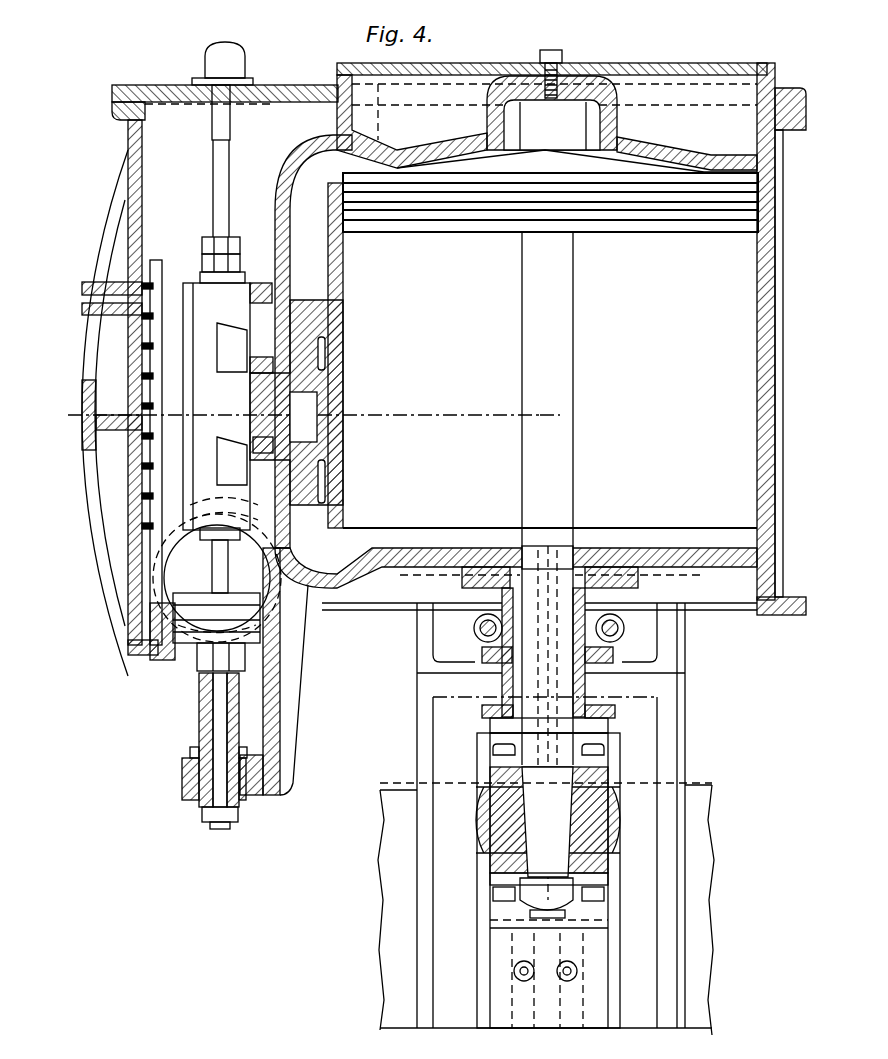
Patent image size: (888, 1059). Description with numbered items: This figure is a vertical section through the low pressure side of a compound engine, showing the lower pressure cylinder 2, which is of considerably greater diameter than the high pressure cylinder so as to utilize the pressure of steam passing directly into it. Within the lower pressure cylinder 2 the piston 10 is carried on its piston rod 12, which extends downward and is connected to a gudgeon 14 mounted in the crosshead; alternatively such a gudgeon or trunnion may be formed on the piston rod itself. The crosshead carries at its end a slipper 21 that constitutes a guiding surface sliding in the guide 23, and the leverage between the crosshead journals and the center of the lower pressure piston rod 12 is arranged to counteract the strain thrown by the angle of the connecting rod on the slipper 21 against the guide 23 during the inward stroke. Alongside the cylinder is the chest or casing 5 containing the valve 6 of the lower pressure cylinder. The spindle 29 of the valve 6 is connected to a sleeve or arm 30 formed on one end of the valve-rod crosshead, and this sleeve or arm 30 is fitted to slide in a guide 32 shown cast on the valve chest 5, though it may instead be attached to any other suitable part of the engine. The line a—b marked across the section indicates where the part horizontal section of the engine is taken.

The lower pressure cylinder 2 is at (766, 432).
The chest or casing 5 is at (158, 155).
The valve 6 is at (228, 406).
The piston 10 is at (470, 232).
The piston rod 12 is at (522, 486).
The gudgeon 14 is at (600, 822).
The slipper 21 is at (500, 912).
The guide 23 is at (496, 1028).
The spindle 29 is at (222, 567).
The sleeve or arm 30 is at (205, 707).
The guide 32 is at (280, 718).
The section line a—b a is at (291, 416).
The section line a— b is at (553, 416).